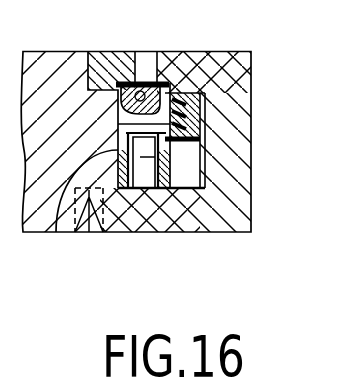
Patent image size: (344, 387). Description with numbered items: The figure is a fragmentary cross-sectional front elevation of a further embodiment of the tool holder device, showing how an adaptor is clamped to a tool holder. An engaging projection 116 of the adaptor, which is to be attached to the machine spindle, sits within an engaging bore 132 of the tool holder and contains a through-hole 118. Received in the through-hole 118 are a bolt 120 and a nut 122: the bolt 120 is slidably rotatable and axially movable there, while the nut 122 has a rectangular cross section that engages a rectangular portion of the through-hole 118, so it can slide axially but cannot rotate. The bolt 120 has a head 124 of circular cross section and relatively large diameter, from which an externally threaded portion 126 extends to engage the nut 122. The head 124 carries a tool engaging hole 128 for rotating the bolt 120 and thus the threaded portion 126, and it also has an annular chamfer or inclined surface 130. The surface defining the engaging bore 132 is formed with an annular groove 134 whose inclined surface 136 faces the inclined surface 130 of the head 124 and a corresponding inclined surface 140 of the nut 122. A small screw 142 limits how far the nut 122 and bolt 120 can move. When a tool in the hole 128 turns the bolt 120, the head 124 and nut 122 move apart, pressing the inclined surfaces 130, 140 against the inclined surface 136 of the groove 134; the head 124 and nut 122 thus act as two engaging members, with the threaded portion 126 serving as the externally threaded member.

The engaging projection 116 is at (172, 192).
The through-hole 118 is at (57, 233).
The bolt 120 is at (175, 132).
The nut 122 is at (150, 190).
The head 124 is at (164, 83).
The externally threaded portion 126 is at (165, 120).
The tool engaging hole 128 is at (147, 82).
The annular chamfer or inclined surface 130 is at (88, 78).
The engaging bore 132 is at (208, 203).
The annular groove 134 is at (128, 192).
The inclined surface 136 is at (134, 82).
The inclined surface 140 is at (107, 233).
The small screw 142 is at (178, 96).